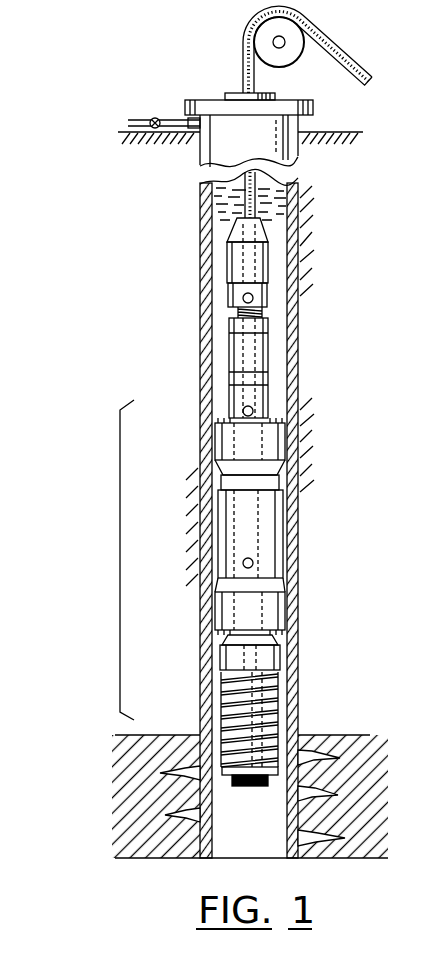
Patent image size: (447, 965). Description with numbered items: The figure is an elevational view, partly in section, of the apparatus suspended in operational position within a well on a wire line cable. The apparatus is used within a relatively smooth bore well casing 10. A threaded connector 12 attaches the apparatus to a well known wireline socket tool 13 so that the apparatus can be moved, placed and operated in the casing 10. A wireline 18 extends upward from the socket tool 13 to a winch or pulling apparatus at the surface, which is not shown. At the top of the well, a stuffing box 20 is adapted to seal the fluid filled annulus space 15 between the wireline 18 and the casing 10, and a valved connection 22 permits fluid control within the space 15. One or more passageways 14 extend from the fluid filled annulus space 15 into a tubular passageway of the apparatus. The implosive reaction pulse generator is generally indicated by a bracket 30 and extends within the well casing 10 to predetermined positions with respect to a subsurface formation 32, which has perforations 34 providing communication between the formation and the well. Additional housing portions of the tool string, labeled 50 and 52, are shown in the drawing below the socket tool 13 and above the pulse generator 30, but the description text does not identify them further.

The well casing 10 is at (232, 140).
The threaded connector 12 is at (257, 296).
The wireline socket tool 13 is at (258, 262).
The passageway 14 is at (246, 298).
The fluid filled annulus space 15 is at (277, 225).
The wireline 18 is at (335, 51).
The stuffing box 20 is at (248, 96).
The valved connection 22 is at (143, 119).
The implosive reaction pulse generator 30 is at (186, 560).
The subsurface formation 32 is at (333, 780).
The perforations 34 is at (300, 756).
The second housing 50 is at (257, 352).
The coupling band 52 is at (257, 378).